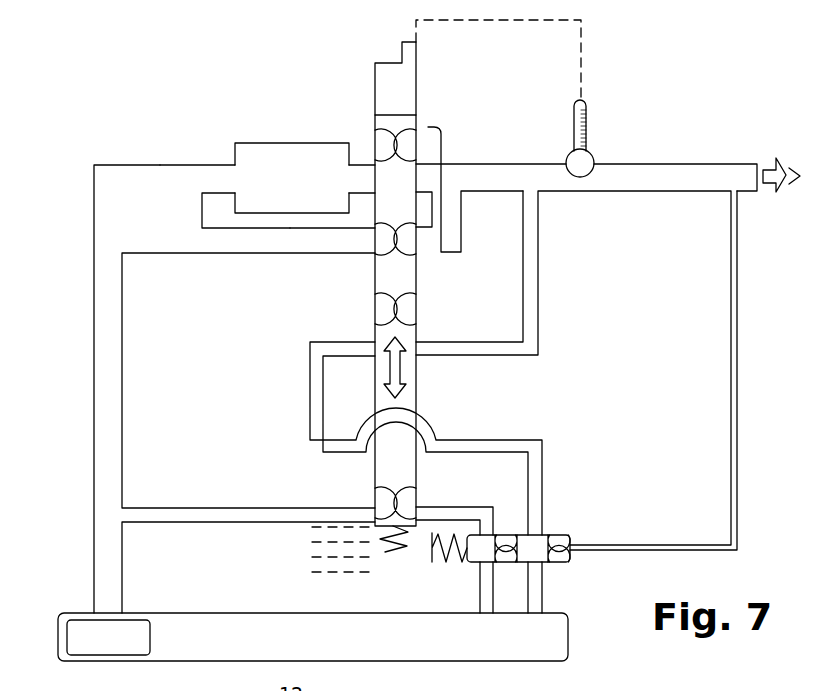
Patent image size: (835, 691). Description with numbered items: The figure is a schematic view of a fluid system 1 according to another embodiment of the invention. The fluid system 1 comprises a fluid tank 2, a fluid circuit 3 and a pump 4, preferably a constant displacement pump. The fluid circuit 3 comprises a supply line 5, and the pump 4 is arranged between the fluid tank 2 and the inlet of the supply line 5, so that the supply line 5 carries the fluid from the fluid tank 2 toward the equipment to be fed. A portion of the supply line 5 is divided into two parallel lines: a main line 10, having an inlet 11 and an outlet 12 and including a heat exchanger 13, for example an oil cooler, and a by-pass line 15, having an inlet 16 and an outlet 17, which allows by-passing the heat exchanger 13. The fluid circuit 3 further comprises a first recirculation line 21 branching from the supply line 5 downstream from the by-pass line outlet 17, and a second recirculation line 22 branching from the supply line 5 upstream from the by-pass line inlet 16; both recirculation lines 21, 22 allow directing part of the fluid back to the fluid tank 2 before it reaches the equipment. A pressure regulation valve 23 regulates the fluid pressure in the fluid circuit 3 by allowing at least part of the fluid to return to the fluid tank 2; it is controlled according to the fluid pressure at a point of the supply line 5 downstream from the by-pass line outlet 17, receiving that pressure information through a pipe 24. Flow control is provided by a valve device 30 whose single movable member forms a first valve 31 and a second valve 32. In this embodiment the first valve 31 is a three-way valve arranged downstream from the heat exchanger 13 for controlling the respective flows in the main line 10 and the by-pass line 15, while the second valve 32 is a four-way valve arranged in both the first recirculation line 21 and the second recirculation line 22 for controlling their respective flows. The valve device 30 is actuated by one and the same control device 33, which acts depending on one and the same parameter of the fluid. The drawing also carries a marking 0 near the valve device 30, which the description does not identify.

The fluid system 1 is at (118, 88).
The fluid tank 2 is at (337, 653).
The fluid circuit 3 is at (75, 247).
The pump 4 is at (108, 637).
The supply line 5 is at (94, 473).
The main line 10 is at (219, 158).
The main line inlet 11 is at (203, 177).
The main line outlet 12 is at (353, 178).
The heat exchanger 13 is at (292, 178).
The by-pass line 15 is at (290, 240).
The by-pass line inlet 16 is at (205, 236).
The by-pass line outlet 17 is at (367, 240).
The first recirculation line 21 is at (540, 312).
The second recirculation line 22 is at (193, 523).
The pressure regulation valve 23 is at (473, 565).
The pipe 24 is at (737, 455).
The valve device 30 is at (363, 470).
The first valve 31 is at (442, 195).
The second valve 32 is at (443, 295).
The control device 33 is at (383, 92).
The zero level 0 is at (332, 547).